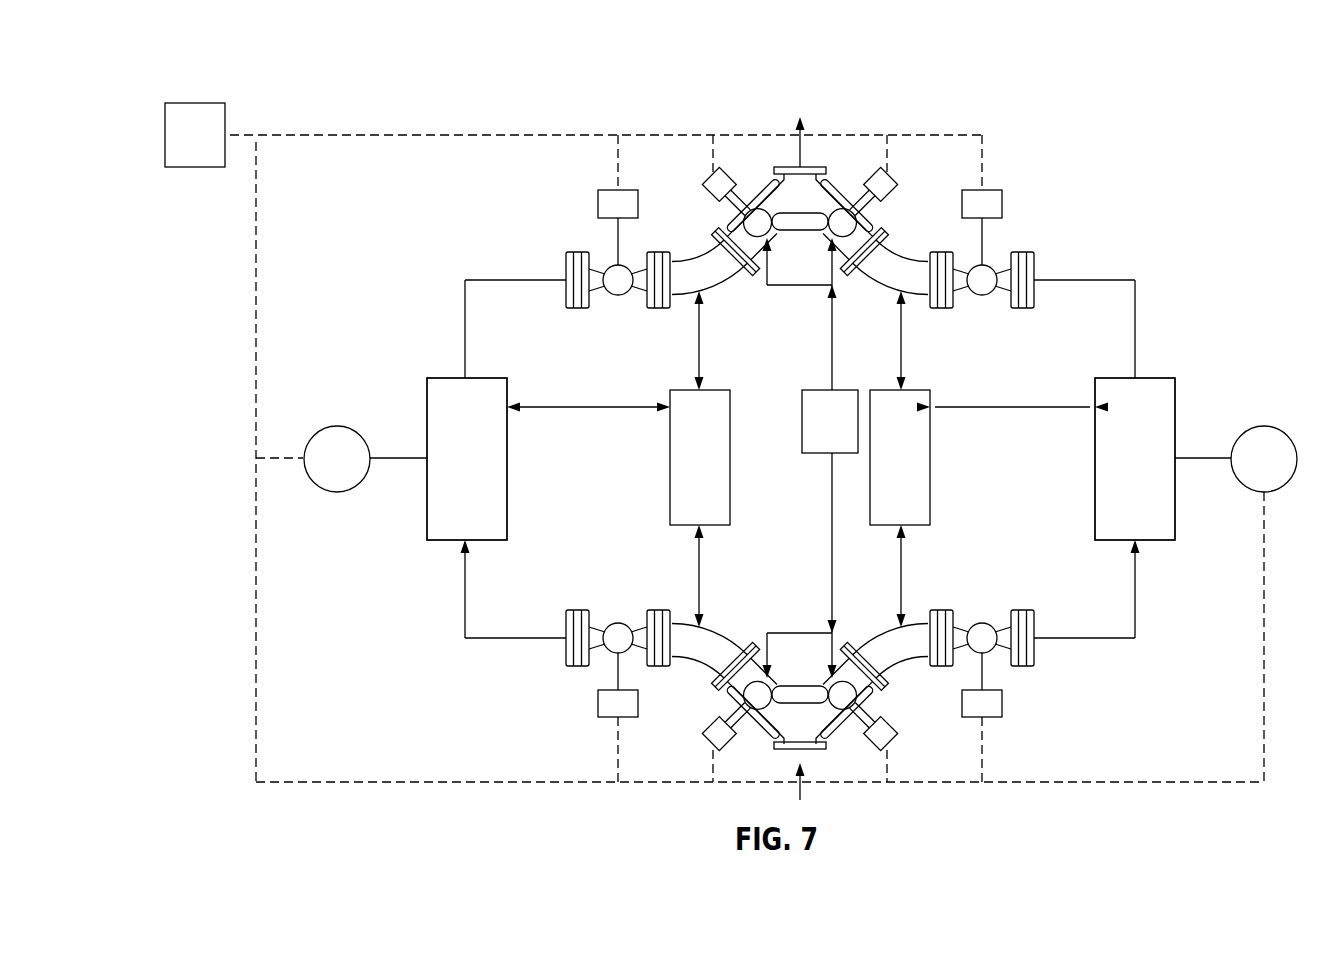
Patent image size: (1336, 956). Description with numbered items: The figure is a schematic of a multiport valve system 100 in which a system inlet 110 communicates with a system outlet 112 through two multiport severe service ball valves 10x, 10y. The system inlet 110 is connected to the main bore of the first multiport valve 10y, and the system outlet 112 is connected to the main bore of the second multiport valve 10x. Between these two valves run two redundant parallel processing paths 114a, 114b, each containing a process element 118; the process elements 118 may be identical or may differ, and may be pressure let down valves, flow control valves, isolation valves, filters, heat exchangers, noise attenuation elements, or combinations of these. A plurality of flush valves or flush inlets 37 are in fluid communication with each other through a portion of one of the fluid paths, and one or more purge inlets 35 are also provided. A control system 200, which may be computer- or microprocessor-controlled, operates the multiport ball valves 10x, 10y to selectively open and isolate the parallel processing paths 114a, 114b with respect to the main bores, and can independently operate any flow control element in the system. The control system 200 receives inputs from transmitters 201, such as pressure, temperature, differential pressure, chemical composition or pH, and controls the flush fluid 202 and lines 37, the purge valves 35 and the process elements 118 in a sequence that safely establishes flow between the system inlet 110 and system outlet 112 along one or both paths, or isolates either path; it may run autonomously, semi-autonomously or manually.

The system 100 is at (234, 78).
The control system 200 is at (177, 135).
The transmitters 201 is at (338, 425).
The parallel processing path 114a is at (450, 372).
The parallel processing path 114b is at (1149, 372).
The process element 118 is at (443, 421).
The flush inlets 37 is at (703, 350).
The flush fluid 202 is at (713, 493).
The purge inlets 35 is at (820, 415).
The multiport severe service ball valve 10x is at (760, 204).
The multiport severe service ball valve 10y is at (756, 720).
The system inlet 110 is at (802, 166).
The system outlet 112 is at (805, 750).